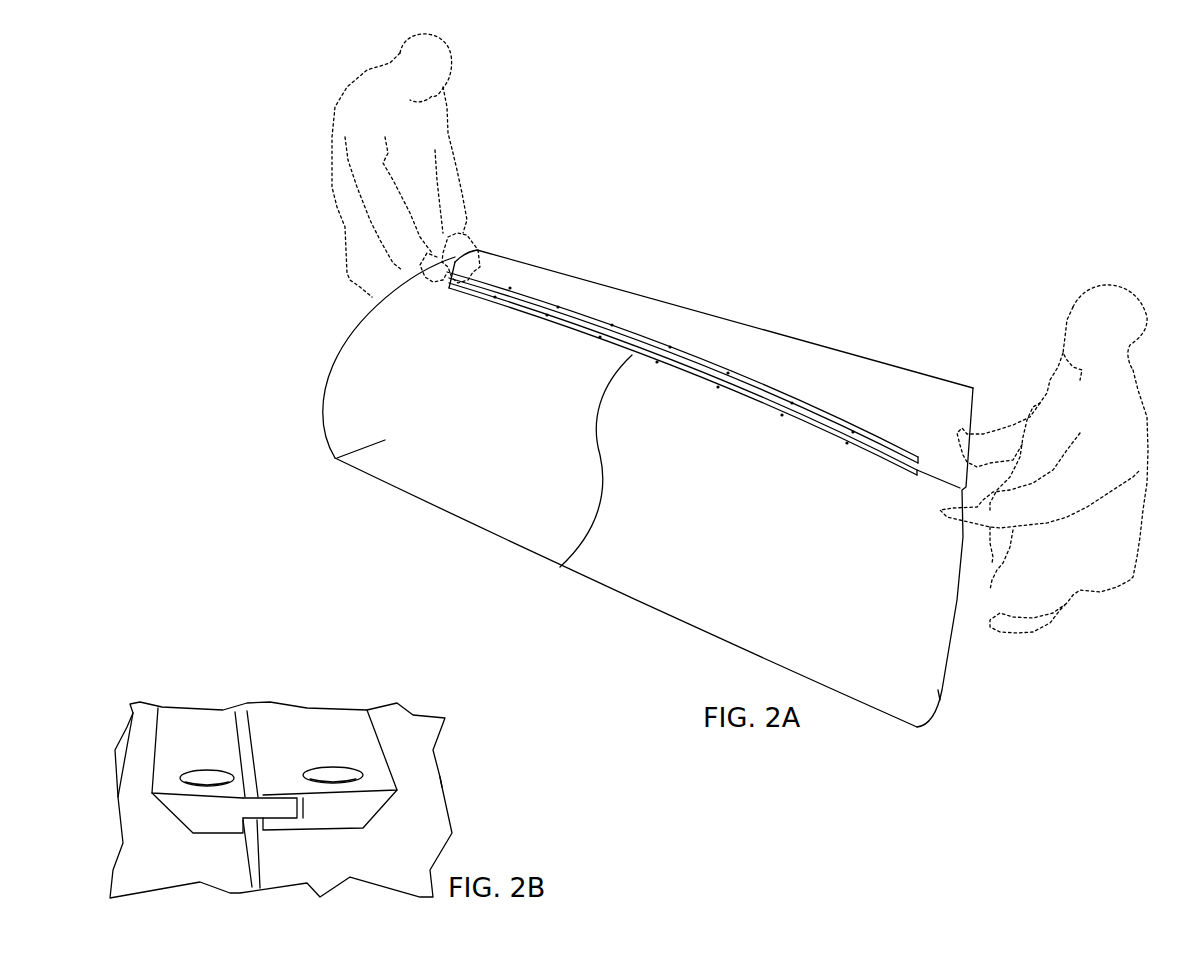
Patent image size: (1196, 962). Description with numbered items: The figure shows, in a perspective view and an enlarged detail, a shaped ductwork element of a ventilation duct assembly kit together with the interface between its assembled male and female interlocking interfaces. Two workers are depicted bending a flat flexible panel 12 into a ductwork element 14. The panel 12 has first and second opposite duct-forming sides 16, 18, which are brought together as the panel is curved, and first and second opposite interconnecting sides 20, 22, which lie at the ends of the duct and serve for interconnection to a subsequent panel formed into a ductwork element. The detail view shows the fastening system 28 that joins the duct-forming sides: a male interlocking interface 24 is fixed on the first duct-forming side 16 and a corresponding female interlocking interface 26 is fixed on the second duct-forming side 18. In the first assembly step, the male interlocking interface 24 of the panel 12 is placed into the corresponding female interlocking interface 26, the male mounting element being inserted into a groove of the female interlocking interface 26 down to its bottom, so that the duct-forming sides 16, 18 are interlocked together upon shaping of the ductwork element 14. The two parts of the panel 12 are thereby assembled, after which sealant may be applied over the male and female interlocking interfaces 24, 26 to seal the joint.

In FIG. 2A, the flat flexible panel 12 is at (336, 458).
In FIG. 2A, the ductwork element 14 is at (358, 402).
In FIG. 2A, the first duct-forming side 16 is at (698, 353).
In FIG. 2B, the first duct-forming side 16 is at (135, 732).
In FIG. 2A, the second duct-forming side 18 is at (567, 562).
In FIG. 2B, the second duct-forming side 18 is at (417, 777).
In FIG. 2A, the first interconnecting side 20 is at (337, 347).
In FIG. 2A, the second interconnecting side 22 is at (932, 670).
In FIG. 2B, the male interlocking interface 24 is at (190, 740).
In FIG. 2B, the female interlocking interface 26 is at (313, 728).
In FIG. 2B, the fastening system 28 is at (272, 683).